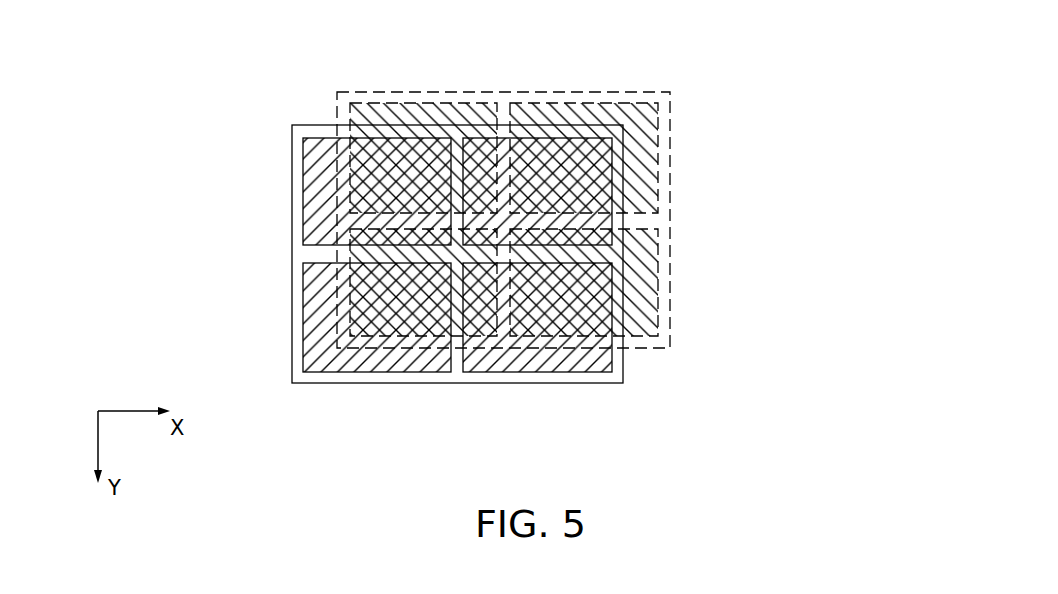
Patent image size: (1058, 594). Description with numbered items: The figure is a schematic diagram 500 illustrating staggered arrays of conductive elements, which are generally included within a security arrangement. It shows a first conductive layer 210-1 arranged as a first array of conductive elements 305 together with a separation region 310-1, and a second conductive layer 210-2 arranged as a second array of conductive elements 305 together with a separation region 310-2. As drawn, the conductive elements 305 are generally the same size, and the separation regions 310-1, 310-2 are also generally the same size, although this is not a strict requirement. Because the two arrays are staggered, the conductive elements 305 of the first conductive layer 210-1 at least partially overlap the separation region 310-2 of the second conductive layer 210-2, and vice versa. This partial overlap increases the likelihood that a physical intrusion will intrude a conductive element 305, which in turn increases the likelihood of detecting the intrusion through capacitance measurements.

The schematic diagram 500 is at (785, 61).
The first conductive layer 210-1 is at (570, 383).
The second conductive layer 210-2 is at (657, 348).
The conductive element 305 is at (404, 103).
The separation region 310-1 is at (452, 380).
The separation region 310-2 is at (668, 221).